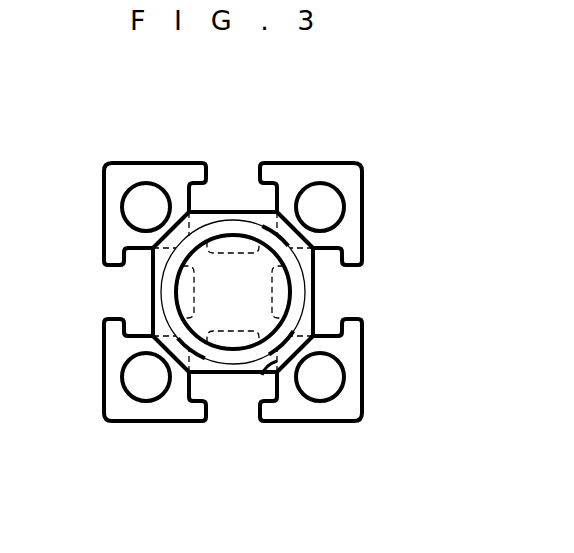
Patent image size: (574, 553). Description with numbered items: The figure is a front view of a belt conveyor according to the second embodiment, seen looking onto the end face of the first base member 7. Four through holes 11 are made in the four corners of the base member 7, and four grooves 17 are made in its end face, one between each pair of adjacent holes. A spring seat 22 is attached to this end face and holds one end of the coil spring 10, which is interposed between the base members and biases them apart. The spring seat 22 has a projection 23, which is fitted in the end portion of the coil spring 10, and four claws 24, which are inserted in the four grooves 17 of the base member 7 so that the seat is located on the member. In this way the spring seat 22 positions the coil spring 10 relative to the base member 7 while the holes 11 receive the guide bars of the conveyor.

The first base member 7 is at (350, 225).
The coil spring 10 is at (210, 377).
The through holes 11 is at (131, 198).
The grooves 17 is at (243, 173).
The spring seat 22 is at (255, 377).
The projection 23 is at (292, 290).
The claws 24 is at (217, 207).